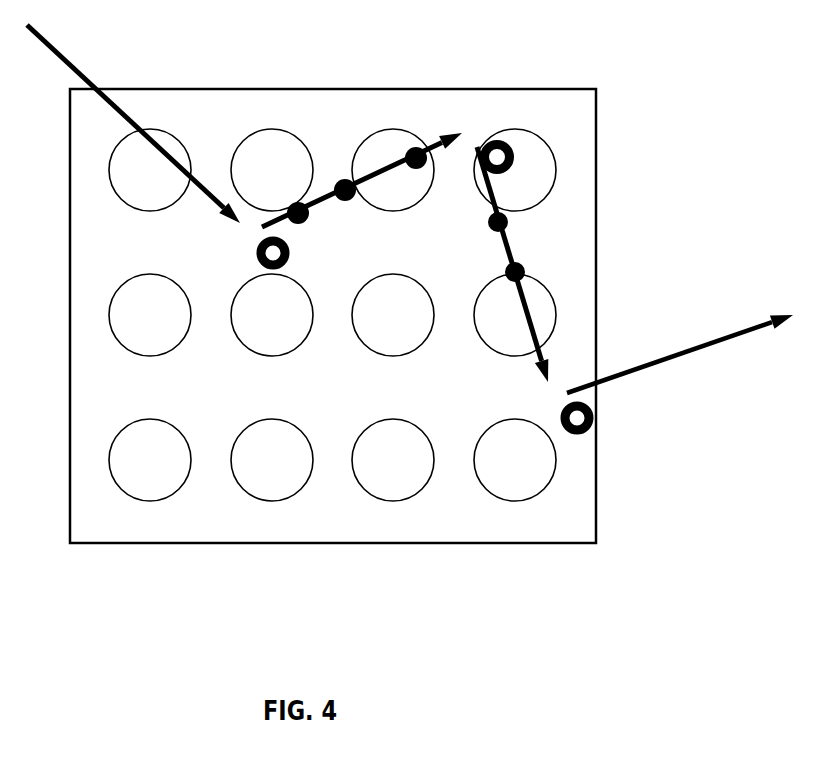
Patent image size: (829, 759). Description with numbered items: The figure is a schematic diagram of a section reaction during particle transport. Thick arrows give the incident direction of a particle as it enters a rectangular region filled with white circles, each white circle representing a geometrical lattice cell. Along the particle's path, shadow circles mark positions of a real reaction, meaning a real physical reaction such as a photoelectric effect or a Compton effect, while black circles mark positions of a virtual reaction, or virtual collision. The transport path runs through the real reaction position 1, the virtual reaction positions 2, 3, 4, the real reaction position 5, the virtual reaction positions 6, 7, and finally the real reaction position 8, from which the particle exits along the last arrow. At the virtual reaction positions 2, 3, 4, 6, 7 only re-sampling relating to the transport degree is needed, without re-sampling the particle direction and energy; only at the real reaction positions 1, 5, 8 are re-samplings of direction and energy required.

The real reaction position 1 is at (262, 238).
The virtual reaction position 2 is at (301, 220).
The virtual reaction position 3 is at (346, 199).
The virtual reaction position 4 is at (416, 167).
The real reaction position 5 is at (485, 158).
The virtual reaction position 6 is at (491, 226).
The virtual reaction position 7 is at (508, 271).
The real reaction position 8 is at (558, 408).